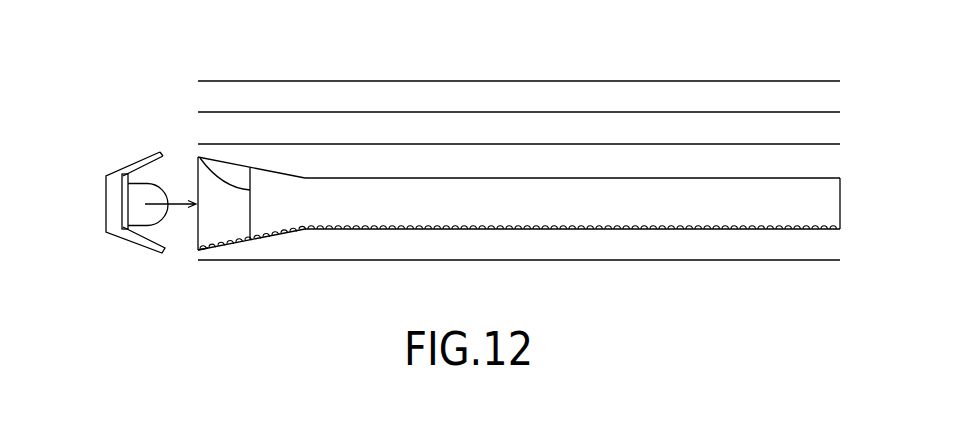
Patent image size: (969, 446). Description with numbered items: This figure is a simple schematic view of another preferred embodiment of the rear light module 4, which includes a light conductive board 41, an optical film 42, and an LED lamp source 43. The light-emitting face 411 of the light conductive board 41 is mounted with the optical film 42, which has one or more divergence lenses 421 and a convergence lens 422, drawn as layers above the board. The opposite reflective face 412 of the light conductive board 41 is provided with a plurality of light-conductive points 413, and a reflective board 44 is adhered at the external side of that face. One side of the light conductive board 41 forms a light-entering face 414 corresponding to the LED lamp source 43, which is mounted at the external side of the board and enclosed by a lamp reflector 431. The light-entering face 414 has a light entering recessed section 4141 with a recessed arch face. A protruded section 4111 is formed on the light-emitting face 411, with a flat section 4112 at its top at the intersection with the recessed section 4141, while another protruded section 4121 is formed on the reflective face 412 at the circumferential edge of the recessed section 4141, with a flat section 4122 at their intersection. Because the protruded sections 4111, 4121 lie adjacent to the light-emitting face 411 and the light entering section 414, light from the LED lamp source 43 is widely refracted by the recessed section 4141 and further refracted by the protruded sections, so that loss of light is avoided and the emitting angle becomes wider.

The rear light module 4 is at (83, 63).
The light conductive board 41 is at (832, 196).
The light-emitting face 411 is at (385, 177).
The protruded section 4111 is at (270, 171).
The flat section 4112 is at (197, 157).
The reflective face 412 is at (385, 232).
The protruded section 4121 is at (263, 240).
The flat section 4122 is at (198, 250).
The light-conductive points 413 is at (358, 232).
The light-entering face 414 is at (198, 218).
The light entering recessed section 4141 is at (200, 158).
The optical film 42 is at (840, 108).
The divergence lens 421 is at (219, 112).
The convergence lens 422 is at (227, 81).
The LED lamp source 43 is at (147, 193).
The lamp reflector 431 is at (133, 163).
The reflective board 44 is at (242, 261).